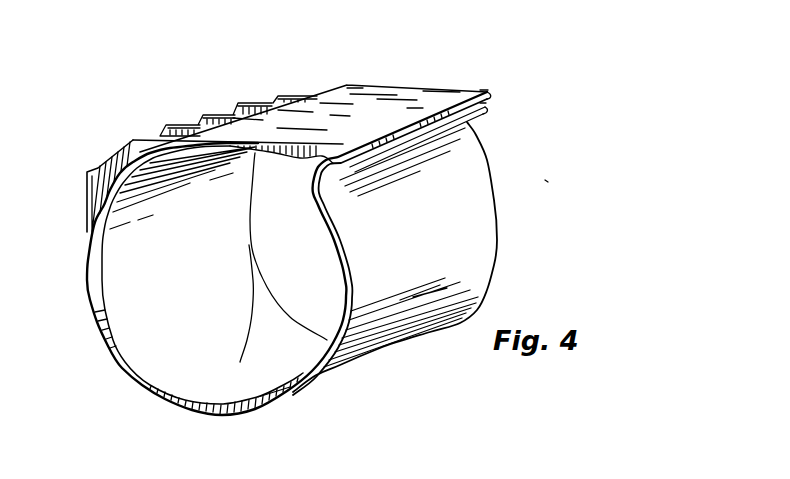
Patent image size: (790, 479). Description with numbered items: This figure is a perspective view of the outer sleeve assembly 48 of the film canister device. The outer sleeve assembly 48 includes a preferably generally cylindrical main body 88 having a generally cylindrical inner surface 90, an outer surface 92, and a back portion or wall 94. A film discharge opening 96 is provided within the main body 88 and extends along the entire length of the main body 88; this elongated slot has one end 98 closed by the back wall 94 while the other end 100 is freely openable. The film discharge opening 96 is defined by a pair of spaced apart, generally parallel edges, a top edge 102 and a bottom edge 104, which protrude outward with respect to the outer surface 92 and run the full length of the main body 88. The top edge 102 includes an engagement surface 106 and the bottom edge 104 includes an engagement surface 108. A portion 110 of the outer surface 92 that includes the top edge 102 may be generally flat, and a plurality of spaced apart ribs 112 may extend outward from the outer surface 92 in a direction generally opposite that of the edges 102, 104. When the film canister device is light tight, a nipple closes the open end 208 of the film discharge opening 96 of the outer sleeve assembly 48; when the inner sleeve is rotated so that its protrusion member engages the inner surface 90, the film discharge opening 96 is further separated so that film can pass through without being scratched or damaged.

The outer sleeve assembly 48 is at (555, 176).
The main body 88 is at (435, 284).
The inner surface 90 is at (210, 304).
The outer surface 92 is at (473, 219).
The back portion or wall 94 is at (299, 186).
The film discharge opening 96 is at (493, 106).
The end of the film discharge opening 98 is at (497, 92).
The other end of the film discharge opening 100 is at (293, 178).
The top edge 102 is at (429, 105).
The bottom edge 104 is at (472, 124).
The engagement surface 106 is at (369, 125).
The engagement surface 108 is at (369, 160).
The portion of the outer surface 110 is at (273, 128).
The ribs 112 is at (160, 133).
The open end 208 is at (232, 389).